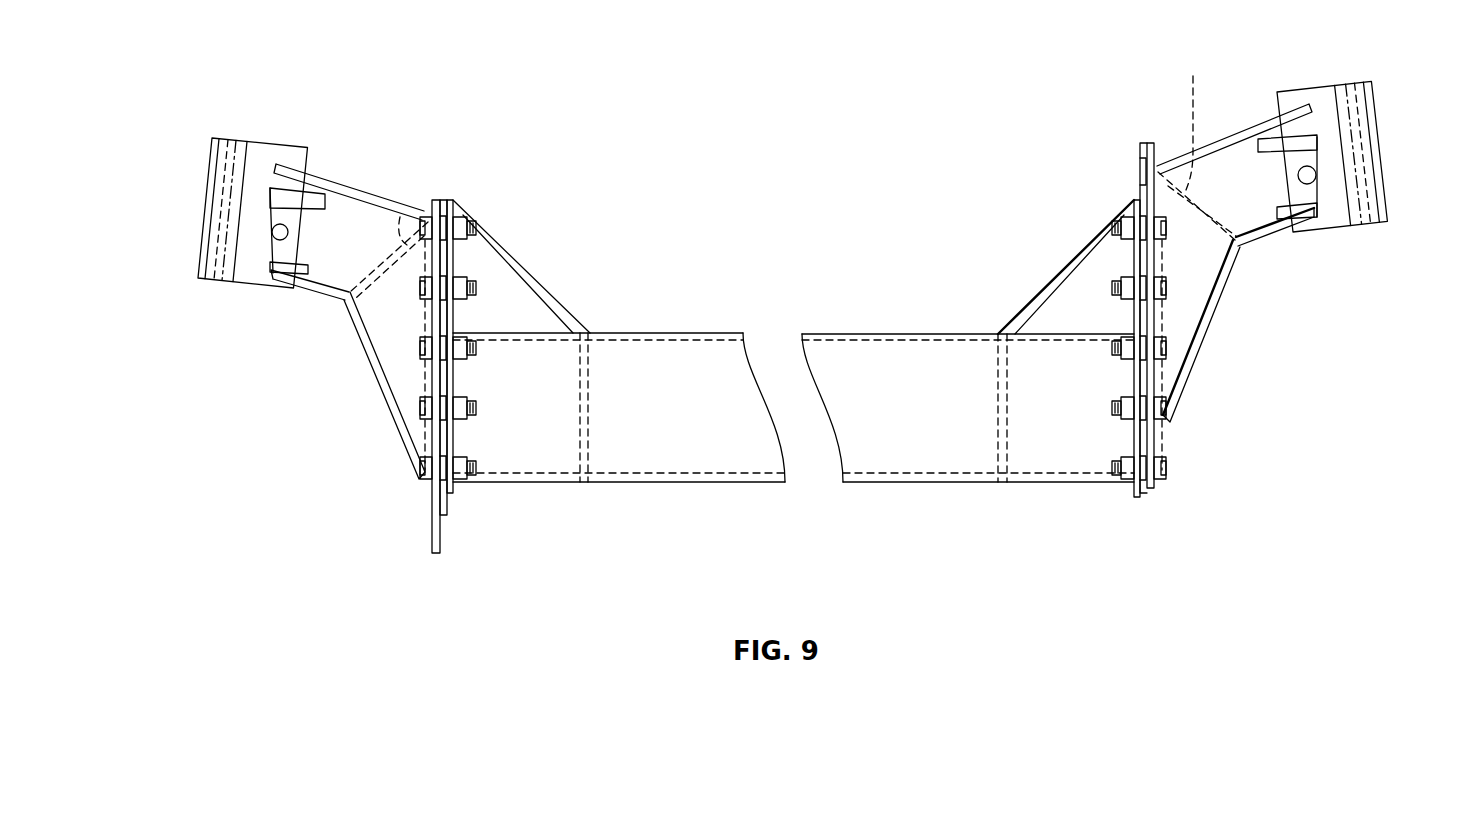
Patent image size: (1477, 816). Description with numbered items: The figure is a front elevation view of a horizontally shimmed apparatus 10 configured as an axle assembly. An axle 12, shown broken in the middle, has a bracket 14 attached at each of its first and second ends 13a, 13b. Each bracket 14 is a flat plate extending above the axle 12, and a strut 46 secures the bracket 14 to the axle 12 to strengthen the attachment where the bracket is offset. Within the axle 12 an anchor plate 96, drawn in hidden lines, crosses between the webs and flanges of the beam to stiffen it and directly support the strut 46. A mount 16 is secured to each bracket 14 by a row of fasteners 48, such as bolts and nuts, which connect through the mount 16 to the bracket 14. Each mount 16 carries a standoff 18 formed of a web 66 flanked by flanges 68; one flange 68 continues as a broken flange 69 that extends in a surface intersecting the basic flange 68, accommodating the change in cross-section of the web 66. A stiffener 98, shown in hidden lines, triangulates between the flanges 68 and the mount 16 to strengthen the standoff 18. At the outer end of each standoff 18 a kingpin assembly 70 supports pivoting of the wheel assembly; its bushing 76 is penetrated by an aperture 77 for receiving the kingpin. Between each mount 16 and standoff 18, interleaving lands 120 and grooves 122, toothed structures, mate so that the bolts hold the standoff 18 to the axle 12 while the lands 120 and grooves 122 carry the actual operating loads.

The apparatus 10 is at (915, 132).
The axle 12 is at (892, 326).
The first end 13a is at (1040, 489).
The second end 13b is at (505, 486).
The bracket 14 is at (452, 203).
The mount 16 is at (432, 543).
The standoff 18 is at (343, 307).
The strut 46 is at (526, 272).
The fasteners 48 is at (469, 228).
The web 66 is at (348, 233).
The flange 68 is at (377, 200).
The broken flange 69 is at (389, 388).
The kingpin assembly 70 is at (195, 256).
The bushing 76 is at (210, 215).
The aperture 77 is at (258, 158).
The anchor plate 96 is at (587, 392).
The stiffener 98 is at (400, 217).
The lands 120 is at (447, 507).
The grooves 122 is at (452, 542).